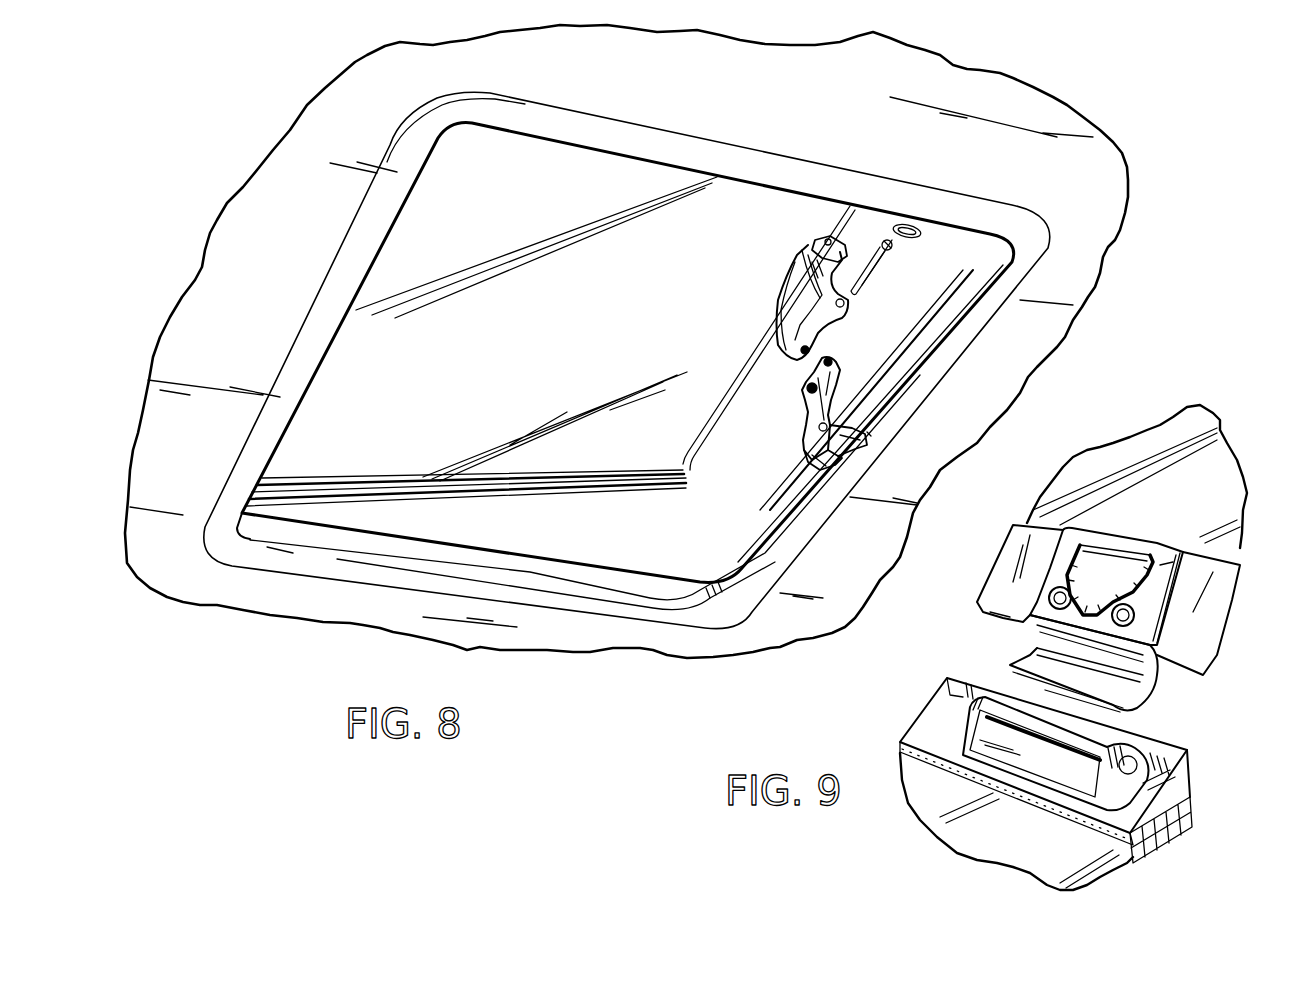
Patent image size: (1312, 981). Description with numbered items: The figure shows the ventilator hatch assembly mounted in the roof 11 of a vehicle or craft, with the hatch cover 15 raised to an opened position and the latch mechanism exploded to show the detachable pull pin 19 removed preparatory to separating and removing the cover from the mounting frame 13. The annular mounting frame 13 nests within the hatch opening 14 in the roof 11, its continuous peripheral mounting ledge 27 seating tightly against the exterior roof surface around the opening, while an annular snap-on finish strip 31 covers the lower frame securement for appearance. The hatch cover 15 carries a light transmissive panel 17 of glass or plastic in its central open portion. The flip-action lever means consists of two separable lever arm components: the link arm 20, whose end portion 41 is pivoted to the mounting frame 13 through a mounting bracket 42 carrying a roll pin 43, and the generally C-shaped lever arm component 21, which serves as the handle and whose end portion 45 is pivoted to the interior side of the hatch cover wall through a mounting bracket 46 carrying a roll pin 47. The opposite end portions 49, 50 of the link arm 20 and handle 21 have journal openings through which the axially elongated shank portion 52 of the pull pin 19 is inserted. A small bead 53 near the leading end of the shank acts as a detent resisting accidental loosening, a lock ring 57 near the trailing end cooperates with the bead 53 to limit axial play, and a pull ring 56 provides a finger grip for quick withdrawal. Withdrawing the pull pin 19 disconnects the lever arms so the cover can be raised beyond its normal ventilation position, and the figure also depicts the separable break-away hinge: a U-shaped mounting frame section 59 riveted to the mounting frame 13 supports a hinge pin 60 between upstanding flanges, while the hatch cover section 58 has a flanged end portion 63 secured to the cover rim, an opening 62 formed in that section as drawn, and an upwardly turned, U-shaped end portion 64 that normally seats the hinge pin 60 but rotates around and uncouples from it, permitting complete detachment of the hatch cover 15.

In FIG. 8, the roof 11 is at (842, 136).
In FIG. 9, the roof 11 is at (945, 826).
In FIG. 8, the mounting frame 13 is at (720, 568).
In FIG. 8, the hatch opening 14 is at (736, 498).
In FIG. 8, the hatch cover 15 is at (570, 497).
In FIG. 8, the light transmissive panel 17 is at (520, 456).
In FIG. 9, the light transmissive panel 17 is at (1220, 448).
In FIG. 8, the pull pin 19 is at (888, 268).
In FIG. 8, the link arm 20 is at (806, 417).
In FIG. 8, the lever arm component 21 is at (773, 300).
In FIG. 9, the mounting ledge 27 is at (895, 752).
In FIG. 8, the finish strip 31 is at (745, 600).
In FIG. 8, the end portion 41 is at (806, 446).
In FIG. 8, the mounting bracket 42 is at (860, 440).
In FIG. 8, the roll pin 43 is at (827, 420).
In FIG. 8, the end portion 45 is at (790, 270).
In FIG. 8, the mounting bracket 46 is at (815, 242).
In FIG. 8, the roll pin 47 is at (827, 238).
In FIG. 8, the end portion 49 is at (807, 388).
In FIG. 8, the end portion 50 is at (812, 352).
In FIG. 8, the shank portion 52 is at (866, 390).
In FIG. 8, the bead 53 is at (858, 290).
In FIG. 8, the pull ring 56 is at (912, 235).
In FIG. 8, the lock ring 57 is at (890, 250).
In FIG. 9, the hatch cover section 58 is at (1050, 597).
In FIG. 9, the mounting frame section 59 is at (957, 710).
In FIG. 9, the hinge pin 60 is at (967, 680).
In FIG. 9, the opening 62 is at (1098, 600).
In FIG. 9, the flanged end portion 63 is at (1136, 572).
In FIG. 9, the end portion 64 is at (1010, 662).